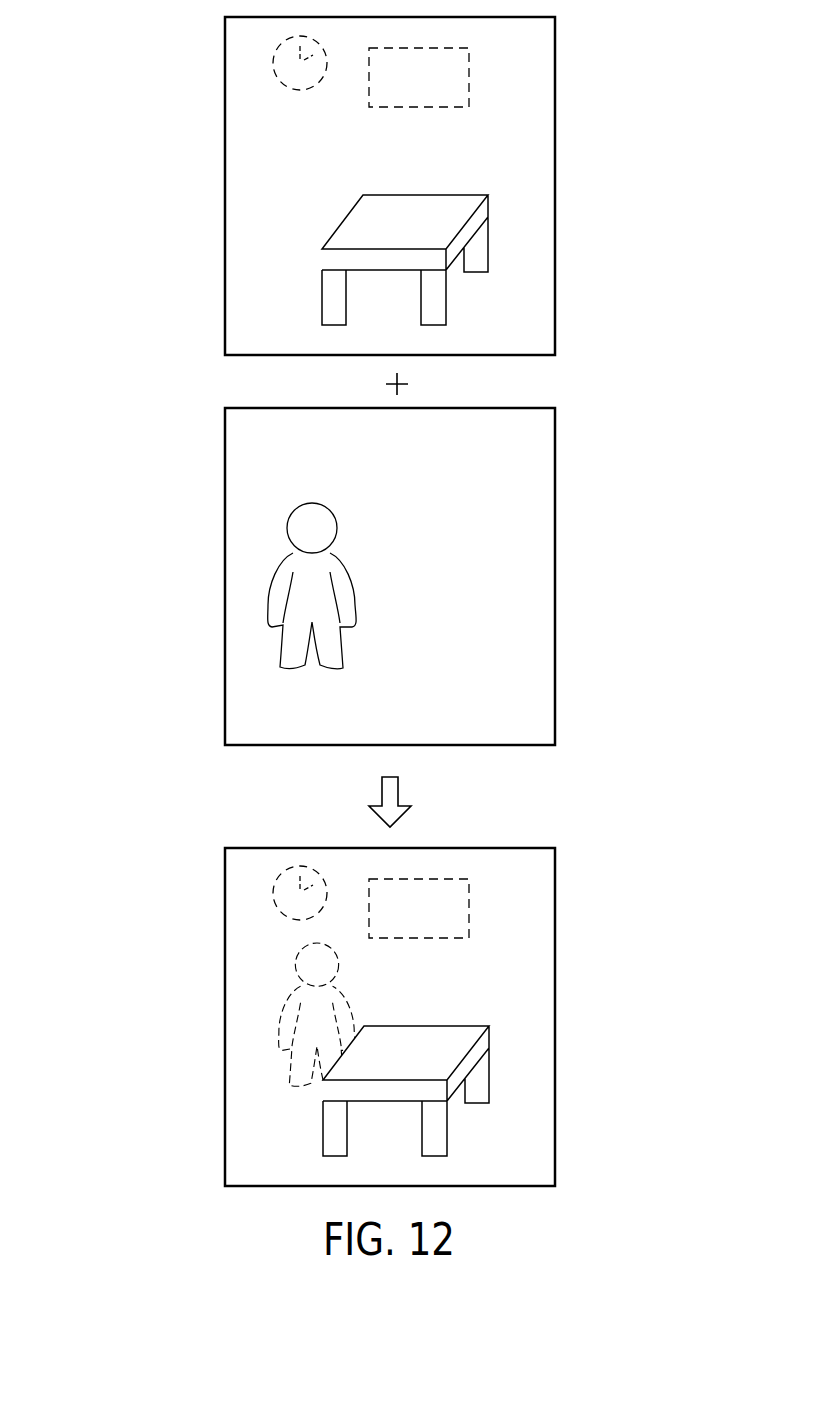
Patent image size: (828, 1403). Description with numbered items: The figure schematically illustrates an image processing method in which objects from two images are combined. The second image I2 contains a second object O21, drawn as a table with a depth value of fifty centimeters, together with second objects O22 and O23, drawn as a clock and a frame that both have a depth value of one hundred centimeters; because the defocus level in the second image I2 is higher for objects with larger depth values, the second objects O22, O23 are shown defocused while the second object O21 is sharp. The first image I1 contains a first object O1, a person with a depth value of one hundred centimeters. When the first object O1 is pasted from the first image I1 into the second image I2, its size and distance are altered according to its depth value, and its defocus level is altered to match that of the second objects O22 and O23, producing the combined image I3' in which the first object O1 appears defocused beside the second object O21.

The second image I2 is at (226, 191).
The first image I1 is at (226, 580).
The synthesized image I3' is at (339, 1017).
The second object O22 is at (273, 63).
The second object O23 is at (462, 70).
The first object O1 is at (318, 527).
The second object O21 is at (461, 204).